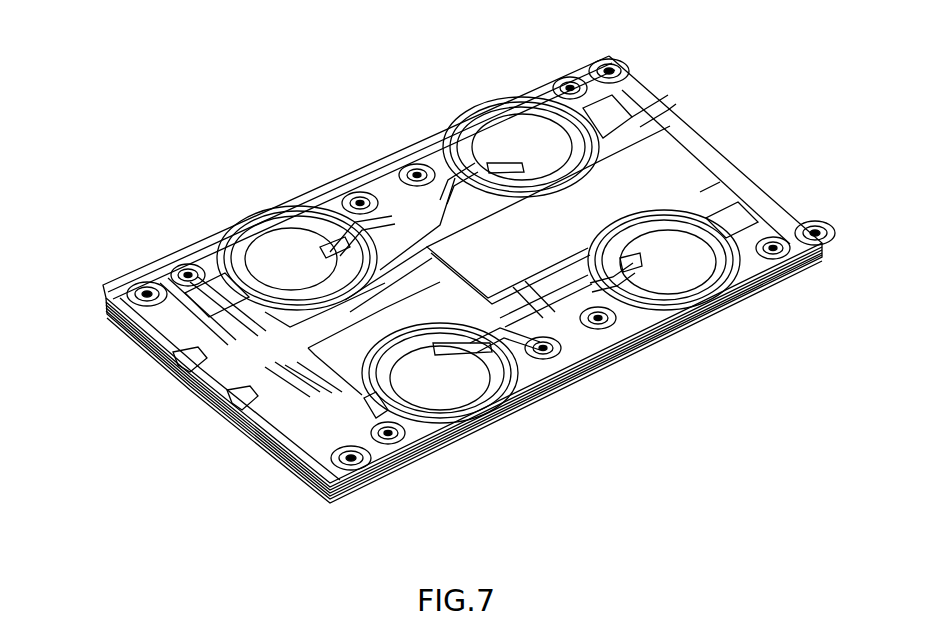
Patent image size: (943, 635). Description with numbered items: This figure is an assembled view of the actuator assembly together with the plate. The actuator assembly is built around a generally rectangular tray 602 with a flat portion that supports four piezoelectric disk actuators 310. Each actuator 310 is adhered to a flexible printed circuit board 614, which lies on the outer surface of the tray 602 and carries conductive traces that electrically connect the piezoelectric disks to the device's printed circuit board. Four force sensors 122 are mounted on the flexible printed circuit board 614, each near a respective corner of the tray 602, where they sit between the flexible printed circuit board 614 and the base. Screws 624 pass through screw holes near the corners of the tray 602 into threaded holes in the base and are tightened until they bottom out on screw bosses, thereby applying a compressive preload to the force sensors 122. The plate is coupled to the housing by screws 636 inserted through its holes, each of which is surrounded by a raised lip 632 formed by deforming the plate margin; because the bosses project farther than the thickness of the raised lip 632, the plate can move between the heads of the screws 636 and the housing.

The tray 602 is at (378, 173).
The raised lip 632 is at (103, 287).
The screws 636 is at (133, 283).
The screws 624 is at (188, 263).
The piezoelectric disk actuators 310 is at (293, 240).
The flexible printed circuit board 614 is at (633, 192).
The force sensors 122 is at (140, 340).